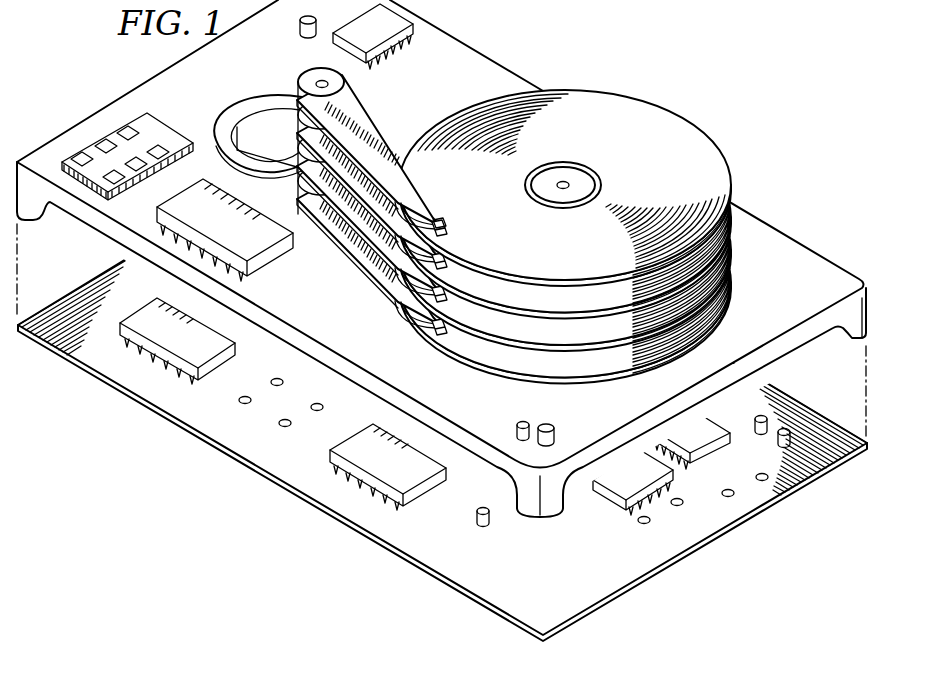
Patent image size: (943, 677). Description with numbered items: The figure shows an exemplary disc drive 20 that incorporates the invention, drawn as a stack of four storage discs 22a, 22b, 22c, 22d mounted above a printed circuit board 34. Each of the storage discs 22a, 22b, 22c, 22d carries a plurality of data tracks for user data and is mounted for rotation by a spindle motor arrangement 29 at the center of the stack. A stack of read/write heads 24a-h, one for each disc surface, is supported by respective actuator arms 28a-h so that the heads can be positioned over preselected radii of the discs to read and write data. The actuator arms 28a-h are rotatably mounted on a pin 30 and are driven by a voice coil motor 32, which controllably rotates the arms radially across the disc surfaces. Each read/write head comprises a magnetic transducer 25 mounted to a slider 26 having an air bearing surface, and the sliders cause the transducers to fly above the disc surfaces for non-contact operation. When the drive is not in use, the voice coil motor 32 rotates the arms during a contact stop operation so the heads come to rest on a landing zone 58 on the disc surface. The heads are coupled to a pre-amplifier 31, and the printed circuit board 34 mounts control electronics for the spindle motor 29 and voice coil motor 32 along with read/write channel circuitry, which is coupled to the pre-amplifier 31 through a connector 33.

The disc drive 20 is at (91, 83).
The storage disc 22a is at (731, 185).
The storage disc 22b is at (731, 216).
The storage disc 22c is at (731, 263).
The storage disc 22d is at (731, 293).
The read/write heads 24a-h is at (434, 216).
The magnetic transducer 25 is at (447, 236).
The slider 26 is at (446, 223).
The actuator arms 28a-h is at (367, 114).
The spindle motor arrangement 29 is at (564, 168).
The pin 30 is at (307, 77).
The pre-amplifier 31 is at (273, 258).
The voice coil motor 32 is at (255, 103).
The connector 33 is at (162, 133).
The printed circuit board 34 is at (566, 590).
The landing zone 58 is at (597, 173).